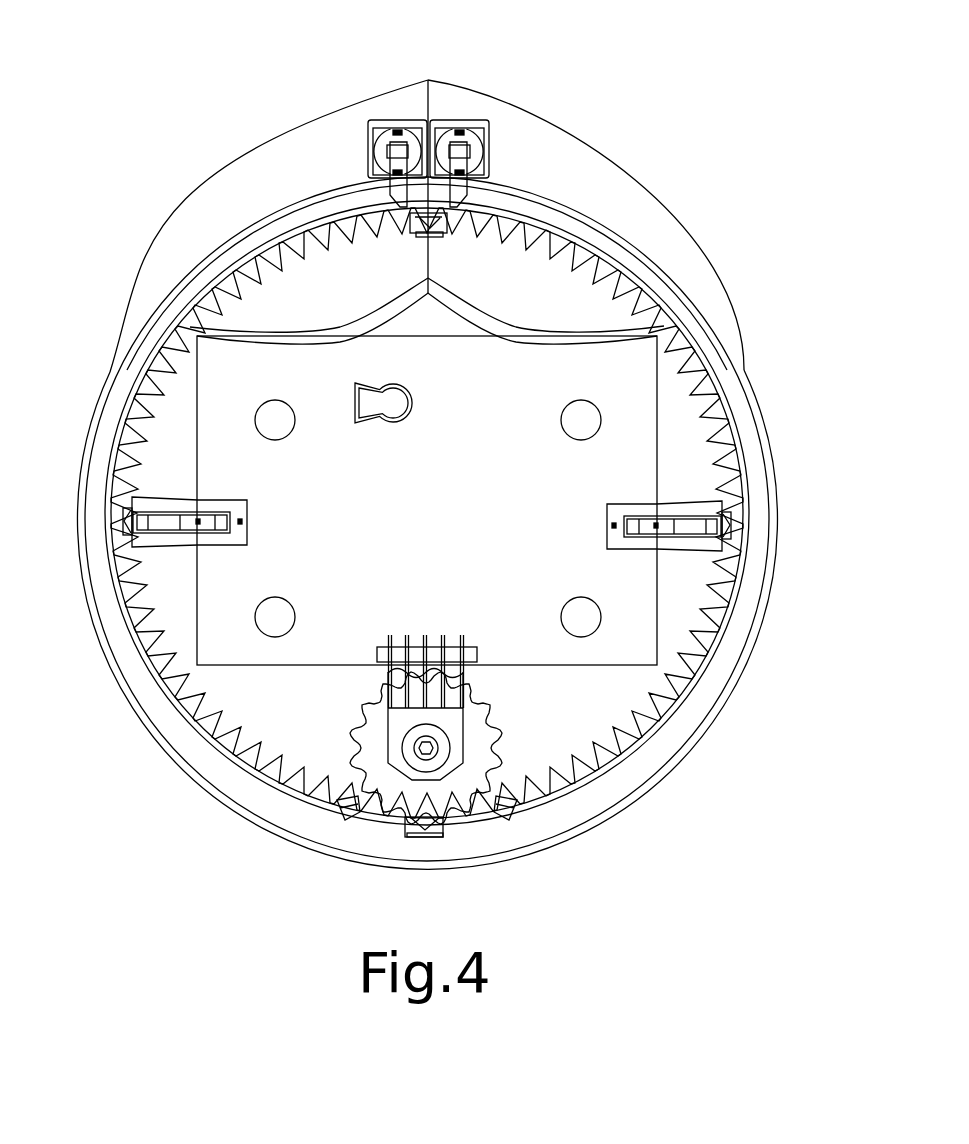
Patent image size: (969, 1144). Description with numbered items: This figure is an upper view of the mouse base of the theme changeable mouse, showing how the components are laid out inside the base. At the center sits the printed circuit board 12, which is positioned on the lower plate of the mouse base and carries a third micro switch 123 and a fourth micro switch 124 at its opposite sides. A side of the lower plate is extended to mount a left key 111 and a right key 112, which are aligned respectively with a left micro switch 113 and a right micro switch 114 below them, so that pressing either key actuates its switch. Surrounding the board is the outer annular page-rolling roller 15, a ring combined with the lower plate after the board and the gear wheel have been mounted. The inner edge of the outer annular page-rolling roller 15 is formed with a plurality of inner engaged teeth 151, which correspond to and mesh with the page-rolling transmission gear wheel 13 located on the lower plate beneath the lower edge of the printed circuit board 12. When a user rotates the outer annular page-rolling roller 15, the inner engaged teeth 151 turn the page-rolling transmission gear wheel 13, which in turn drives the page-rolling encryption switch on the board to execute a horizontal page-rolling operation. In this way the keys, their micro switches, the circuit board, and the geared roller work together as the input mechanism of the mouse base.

The left key 111 is at (305, 148).
The right key 112 is at (567, 153).
The left micro switch 113 is at (397, 132).
The right micro switch 114 is at (465, 130).
The printed circuit board 12 is at (638, 468).
The third micro switch 123 is at (238, 520).
The fourth micro switch 124 is at (617, 509).
The outer annular page-rolling roller 15 is at (760, 571).
The inner engaged teeth 151 is at (716, 634).
The page-rolling transmission gear wheel 13 is at (480, 752).